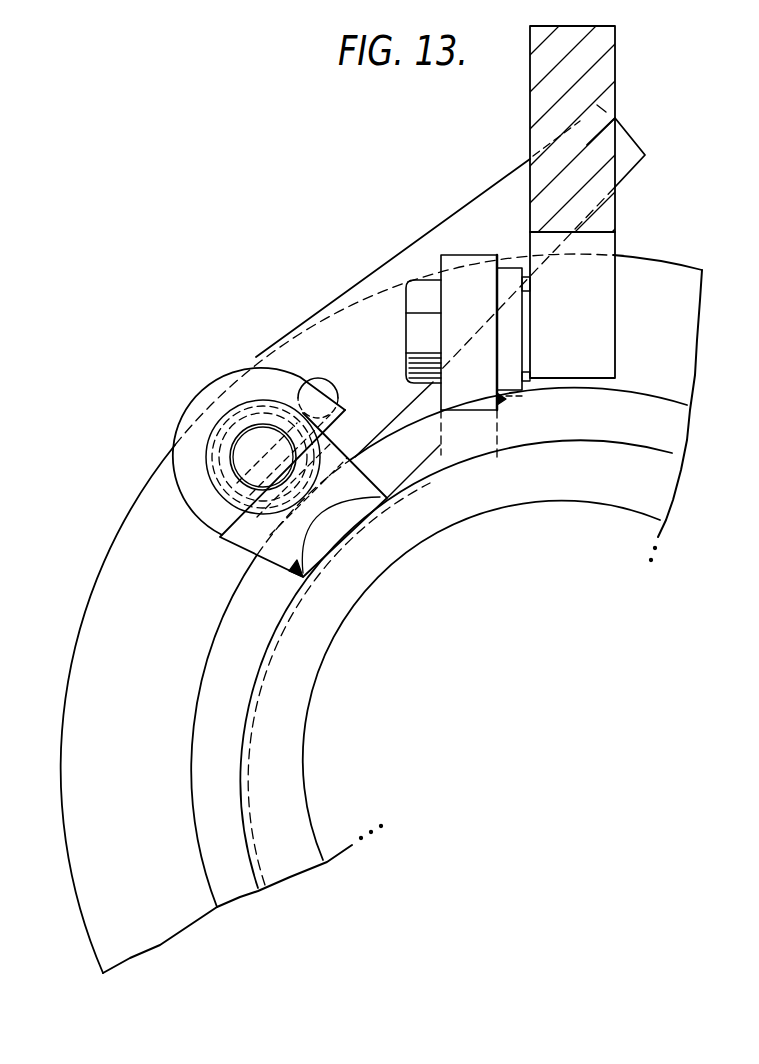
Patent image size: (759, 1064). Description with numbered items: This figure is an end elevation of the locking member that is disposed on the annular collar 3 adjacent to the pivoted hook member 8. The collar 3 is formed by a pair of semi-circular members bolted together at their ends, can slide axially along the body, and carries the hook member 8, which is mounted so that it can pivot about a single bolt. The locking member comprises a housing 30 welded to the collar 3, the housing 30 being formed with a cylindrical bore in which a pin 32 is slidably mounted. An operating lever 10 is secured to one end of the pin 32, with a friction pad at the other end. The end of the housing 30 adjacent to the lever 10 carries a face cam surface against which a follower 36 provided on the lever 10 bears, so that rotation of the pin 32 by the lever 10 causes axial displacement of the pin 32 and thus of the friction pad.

The annular collar 3 is at (323, 628).
The hook member 8 is at (590, 83).
The operating lever 10 is at (468, 222).
The housing 30 is at (220, 373).
The pin 32 is at (252, 467).
The follower 36 is at (324, 380).